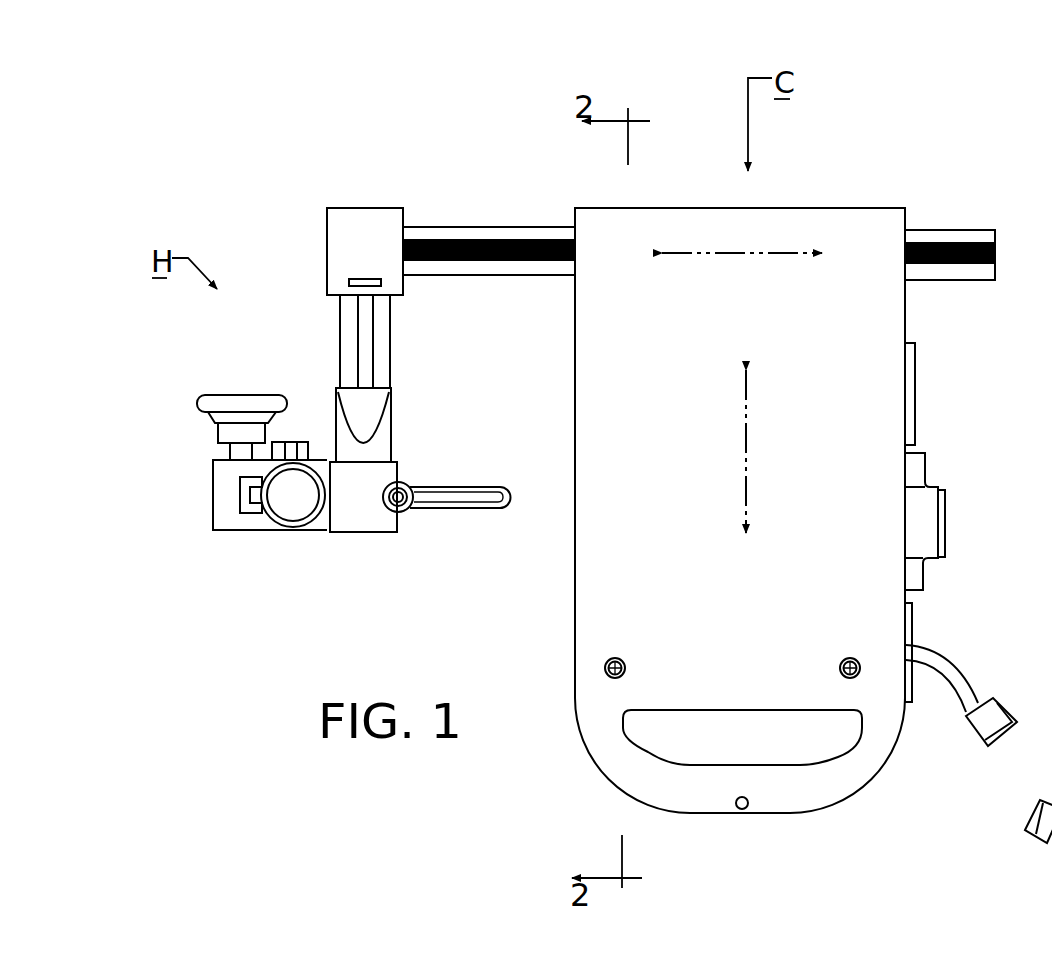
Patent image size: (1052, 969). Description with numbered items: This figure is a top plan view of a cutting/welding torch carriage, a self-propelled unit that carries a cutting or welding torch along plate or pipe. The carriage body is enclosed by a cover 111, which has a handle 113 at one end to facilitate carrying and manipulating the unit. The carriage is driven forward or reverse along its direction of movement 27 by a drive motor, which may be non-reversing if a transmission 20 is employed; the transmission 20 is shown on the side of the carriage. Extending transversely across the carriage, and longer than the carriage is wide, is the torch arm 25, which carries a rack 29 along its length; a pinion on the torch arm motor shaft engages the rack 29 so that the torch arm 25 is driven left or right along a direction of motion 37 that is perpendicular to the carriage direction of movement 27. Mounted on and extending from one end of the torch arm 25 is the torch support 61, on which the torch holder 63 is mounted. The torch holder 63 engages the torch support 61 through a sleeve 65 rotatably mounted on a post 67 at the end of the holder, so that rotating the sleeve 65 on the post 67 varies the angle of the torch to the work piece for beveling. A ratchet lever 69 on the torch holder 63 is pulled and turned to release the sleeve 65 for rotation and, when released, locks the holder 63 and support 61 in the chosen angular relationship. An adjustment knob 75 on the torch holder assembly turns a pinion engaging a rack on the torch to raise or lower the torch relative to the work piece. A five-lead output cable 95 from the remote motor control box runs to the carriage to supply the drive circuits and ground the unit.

The transmission 20 is at (922, 508).
The torch arm 25 is at (473, 232).
The direction of movement of the carriage 27 is at (746, 452).
The rack 29 is at (965, 246).
The direction of motion of the torch arm 37 is at (741, 255).
The torch support 61 is at (327, 292).
The torch holder 63 is at (305, 532).
The sleeve 65 is at (387, 470).
The post 67 is at (363, 532).
The ratchet lever 69 is at (455, 497).
The adjustment knob 75 is at (243, 395).
The output cable 95 is at (963, 683).
The cover 111 is at (605, 630).
The handle 113 is at (790, 795).